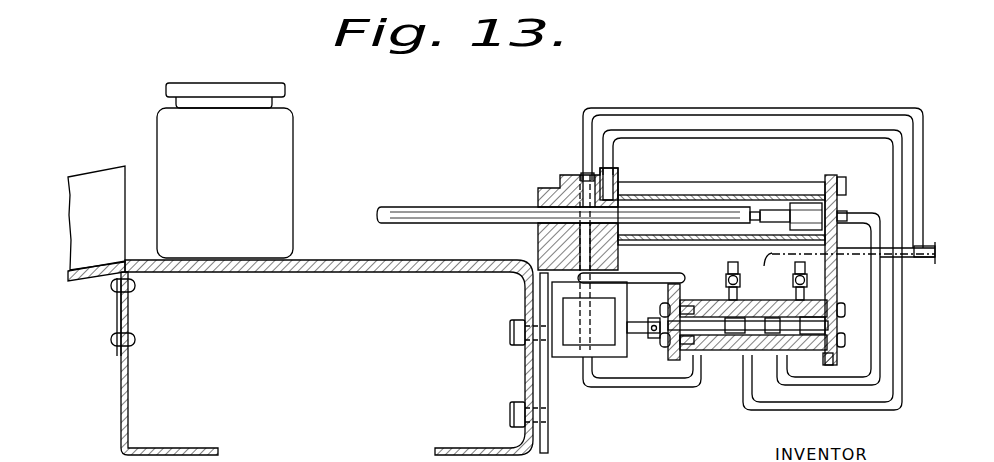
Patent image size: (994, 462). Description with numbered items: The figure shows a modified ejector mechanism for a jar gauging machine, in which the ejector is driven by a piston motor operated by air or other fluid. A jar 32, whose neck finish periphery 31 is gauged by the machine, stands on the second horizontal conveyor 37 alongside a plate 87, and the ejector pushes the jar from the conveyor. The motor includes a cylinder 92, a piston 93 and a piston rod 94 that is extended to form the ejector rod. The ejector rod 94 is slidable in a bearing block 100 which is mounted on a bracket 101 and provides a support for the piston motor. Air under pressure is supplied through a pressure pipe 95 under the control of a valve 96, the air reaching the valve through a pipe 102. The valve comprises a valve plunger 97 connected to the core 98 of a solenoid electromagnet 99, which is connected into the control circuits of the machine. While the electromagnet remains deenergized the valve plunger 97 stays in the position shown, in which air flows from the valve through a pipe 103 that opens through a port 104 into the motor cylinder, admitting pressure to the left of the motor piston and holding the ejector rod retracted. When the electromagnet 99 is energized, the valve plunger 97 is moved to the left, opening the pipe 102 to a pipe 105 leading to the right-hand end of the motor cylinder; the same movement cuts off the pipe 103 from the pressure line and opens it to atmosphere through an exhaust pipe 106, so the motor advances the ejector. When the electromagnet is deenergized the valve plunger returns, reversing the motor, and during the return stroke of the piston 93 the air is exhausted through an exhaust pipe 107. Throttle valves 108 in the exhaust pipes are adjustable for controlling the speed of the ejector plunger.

The periphery 31 is at (290, 93).
The jar 32 is at (281, 155).
The second horizontal conveyor 37 is at (313, 258).
The plate 87 is at (92, 187).
The cylinder 92 is at (720, 195).
The piston 93 is at (803, 208).
The piston rod 94 is at (455, 210).
The pressure pipe 95 is at (919, 252).
The valve 96 is at (730, 350).
The valve plunger 97 is at (712, 353).
The core 98 is at (643, 333).
The solenoid electromagnet 99 is at (610, 348).
The bearing block 100 is at (542, 243).
The bracket 101 is at (538, 290).
The pipe 102 is at (836, 259).
The pipe 103 is at (682, 135).
The port 104 is at (620, 177).
The pipe 105 is at (827, 384).
The exhaust pipe 106 is at (729, 268).
The exhaust pipe 107 is at (811, 300).
The throttle valve 108 is at (728, 282).